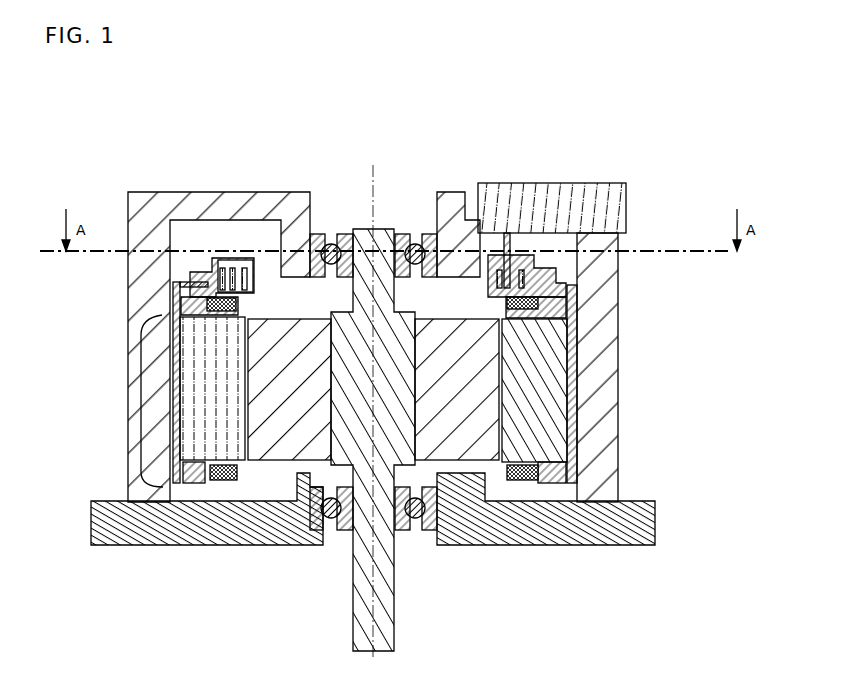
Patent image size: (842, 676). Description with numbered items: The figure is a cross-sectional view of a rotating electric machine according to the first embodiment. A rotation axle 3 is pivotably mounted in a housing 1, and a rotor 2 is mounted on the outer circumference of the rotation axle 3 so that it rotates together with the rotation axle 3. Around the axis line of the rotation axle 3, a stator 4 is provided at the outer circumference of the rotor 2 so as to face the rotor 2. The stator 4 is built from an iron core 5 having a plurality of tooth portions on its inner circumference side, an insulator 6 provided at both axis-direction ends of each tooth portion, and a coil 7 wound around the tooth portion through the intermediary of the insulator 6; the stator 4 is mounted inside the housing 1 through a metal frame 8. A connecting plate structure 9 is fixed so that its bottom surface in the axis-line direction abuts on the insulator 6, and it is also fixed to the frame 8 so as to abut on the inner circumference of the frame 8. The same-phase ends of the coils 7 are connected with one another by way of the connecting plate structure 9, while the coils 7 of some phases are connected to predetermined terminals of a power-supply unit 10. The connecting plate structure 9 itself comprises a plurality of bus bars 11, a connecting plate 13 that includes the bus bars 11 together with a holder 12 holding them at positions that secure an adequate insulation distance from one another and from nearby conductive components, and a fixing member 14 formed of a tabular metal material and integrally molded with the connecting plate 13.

The housing 1 is at (152, 207).
The rotor 2 is at (463, 398).
The rotation axle 3 is at (372, 602).
The stator 4 is at (141, 405).
The iron core 5 is at (220, 403).
The insulator 6 is at (185, 303).
The coil 7 is at (219, 480).
The frame 8 is at (572, 428).
The connecting plate structure 9 is at (330, 116).
The power-supply unit 10 is at (612, 210).
The bus bar 11 is at (232, 262).
The holder 12 is at (262, 262).
The connecting plate 13 is at (333, 153).
The fixing member 14 is at (178, 287).